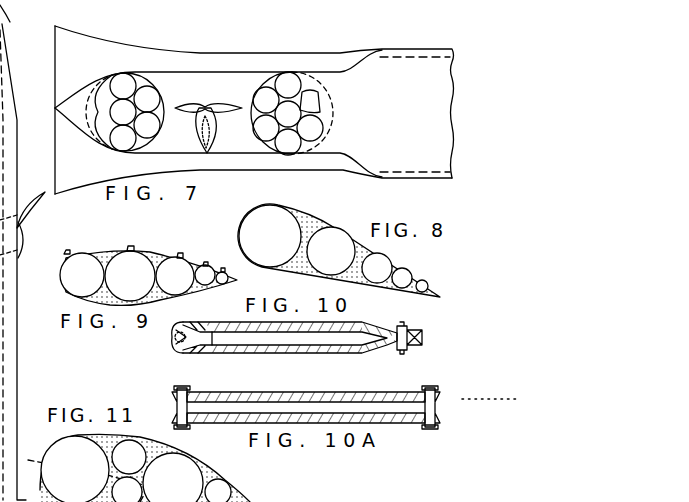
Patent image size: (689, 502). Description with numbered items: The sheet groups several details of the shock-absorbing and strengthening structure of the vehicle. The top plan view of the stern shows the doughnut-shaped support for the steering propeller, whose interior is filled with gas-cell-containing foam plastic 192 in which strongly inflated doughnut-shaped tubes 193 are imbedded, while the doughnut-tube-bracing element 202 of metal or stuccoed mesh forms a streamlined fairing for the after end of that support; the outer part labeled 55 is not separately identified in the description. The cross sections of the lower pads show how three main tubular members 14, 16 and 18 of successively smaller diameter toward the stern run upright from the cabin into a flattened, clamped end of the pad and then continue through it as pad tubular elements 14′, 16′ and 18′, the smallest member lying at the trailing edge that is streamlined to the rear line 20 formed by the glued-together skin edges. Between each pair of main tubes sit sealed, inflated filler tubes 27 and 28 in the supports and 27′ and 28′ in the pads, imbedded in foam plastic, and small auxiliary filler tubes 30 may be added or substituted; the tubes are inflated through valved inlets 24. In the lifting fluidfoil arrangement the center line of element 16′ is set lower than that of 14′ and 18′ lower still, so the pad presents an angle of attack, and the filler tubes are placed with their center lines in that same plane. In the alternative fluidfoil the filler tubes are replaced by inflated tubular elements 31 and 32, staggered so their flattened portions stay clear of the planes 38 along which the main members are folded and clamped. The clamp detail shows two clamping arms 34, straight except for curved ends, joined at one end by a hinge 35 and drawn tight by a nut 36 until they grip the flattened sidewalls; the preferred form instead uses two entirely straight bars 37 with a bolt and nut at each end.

In FIG. 7, the sleeve 55 is at (104, 38).
In FIG. 7, the doughnut-tube-bracing element 202 is at (90, 86).
In FIG. 7, the gas-cell-containing foam plastic 192 is at (166, 73).
In FIG. 7, the doughnut-shaped tubes 193 is at (153, 125).
In FIG. 7, the rear line 20 is at (19, 350).
In FIG. 8, the small auxiliary filler tubes 30 is at (305, 211).
In FIG. 8, the pad tubular element 14′ is at (262, 245).
In FIG. 11, the pad tubular element 14′ is at (68, 495).
In FIG. 8, the filler tube 27′ is at (323, 260).
In FIG. 8, the pad tubular element 16′ is at (370, 276).
In FIG. 11, the pad tubular element 16′ is at (169, 479).
In FIG. 8, the filler tube 28′ is at (405, 271).
In FIG. 8, the pad tubular element 18′ is at (426, 284).
In FIG. 9, the main tubular member 14 is at (75, 283).
In FIG. 9, the filler tube 27 is at (122, 284).
In FIG. 9, the main tubular member 16 is at (168, 284).
In FIG. 9, the filler tube 28 is at (204, 262).
In FIG. 9, the valved inlets 24 is at (64, 253).
In FIG. 9, the main tubular member 18 is at (227, 286).
In FIG. 10, the clamping arms 34 is at (360, 323).
In FIG. 10, the hinge 35 is at (174, 340).
In FIG. 10, the nut 36 is at (386, 349).
In FIG. 10A, the straight bars 37 is at (300, 393).
In FIG. 11, the plane 38 is at (49, 464).
In FIG. 11, the inflated tubular element 31 is at (124, 458).
In FIG. 11, the inflated tubular element 32 is at (224, 495).